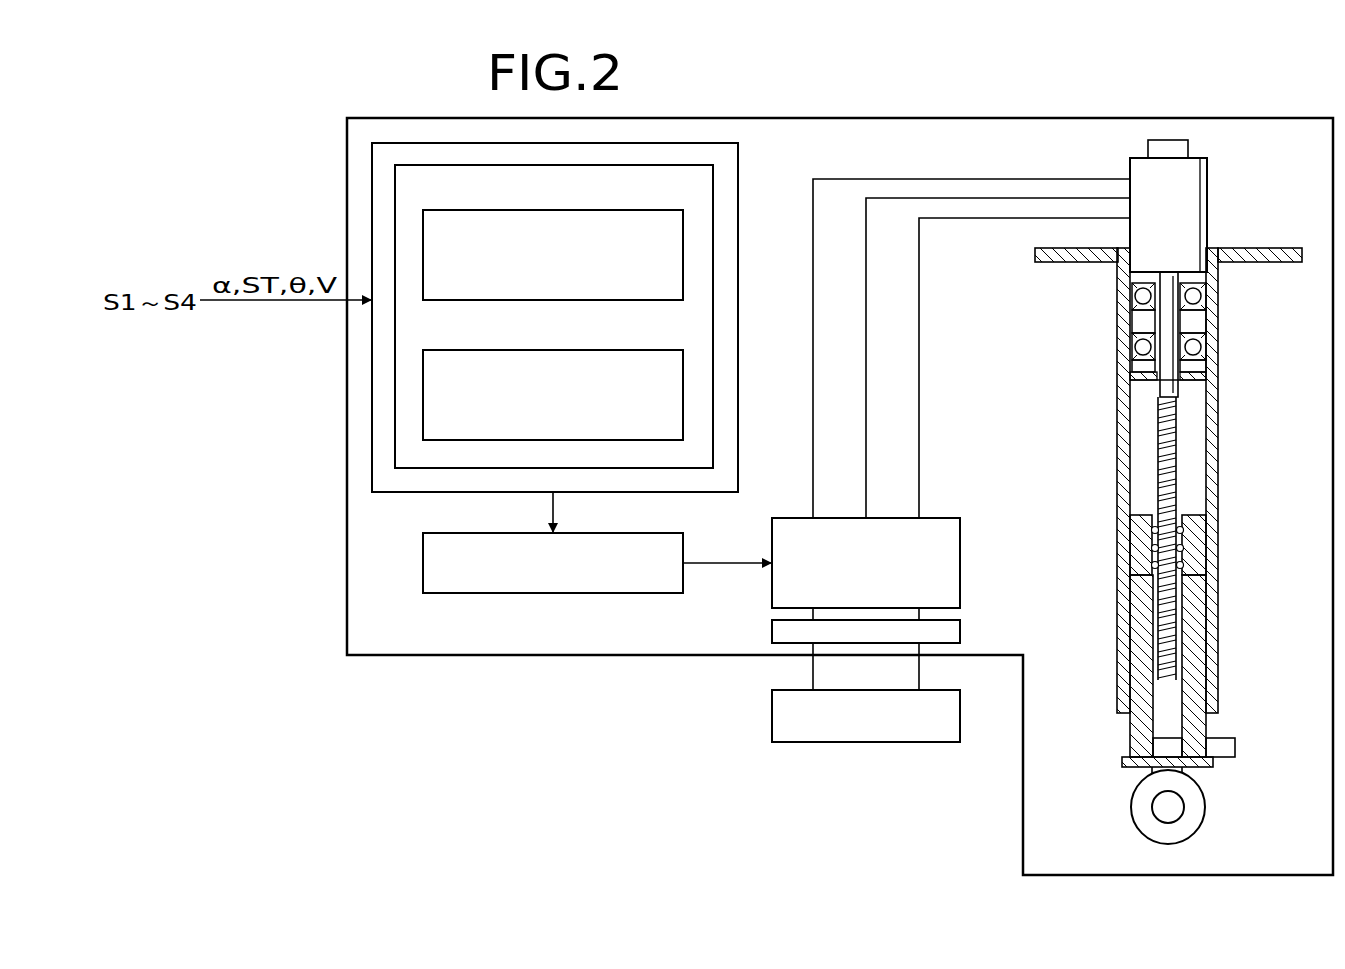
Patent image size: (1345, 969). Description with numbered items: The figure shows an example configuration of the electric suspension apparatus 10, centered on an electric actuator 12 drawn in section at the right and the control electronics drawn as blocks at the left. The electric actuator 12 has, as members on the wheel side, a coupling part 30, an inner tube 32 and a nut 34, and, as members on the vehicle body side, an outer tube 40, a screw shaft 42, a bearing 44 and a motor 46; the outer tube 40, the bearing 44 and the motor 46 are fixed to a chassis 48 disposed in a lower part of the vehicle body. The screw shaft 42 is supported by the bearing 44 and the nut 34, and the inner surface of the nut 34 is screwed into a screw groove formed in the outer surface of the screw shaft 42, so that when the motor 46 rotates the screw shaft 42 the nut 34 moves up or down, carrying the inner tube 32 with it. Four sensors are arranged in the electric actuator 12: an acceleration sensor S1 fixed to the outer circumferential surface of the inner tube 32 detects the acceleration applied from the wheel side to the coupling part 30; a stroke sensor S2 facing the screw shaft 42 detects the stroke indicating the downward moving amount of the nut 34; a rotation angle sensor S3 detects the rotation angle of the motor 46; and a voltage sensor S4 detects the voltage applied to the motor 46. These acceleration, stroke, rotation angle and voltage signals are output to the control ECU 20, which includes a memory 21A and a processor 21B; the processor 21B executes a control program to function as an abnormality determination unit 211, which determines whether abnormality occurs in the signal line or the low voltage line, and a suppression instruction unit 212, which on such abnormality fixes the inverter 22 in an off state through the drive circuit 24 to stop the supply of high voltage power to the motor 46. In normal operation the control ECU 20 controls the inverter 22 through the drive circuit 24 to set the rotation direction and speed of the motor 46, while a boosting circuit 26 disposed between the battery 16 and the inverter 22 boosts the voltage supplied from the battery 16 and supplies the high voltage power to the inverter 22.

The electric suspension apparatus 10 is at (843, 118).
The electric actuator 12 is at (1258, 529).
The battery 16 is at (772, 705).
The control ECU 20 is at (488, 315).
The memory 21A is at (368, 165).
The processor 21B is at (393, 240).
The abnormality determination unit 211 is at (535, 210).
The suppression instruction unit 212 is at (535, 350).
The inverter 22 is at (943, 518).
The drive circuit 24 is at (625, 533).
The boosting circuit 26 is at (960, 635).
The coupling part 30 is at (1195, 808).
The inner tube 32 is at (1135, 750).
The nut 34 is at (1135, 530).
The outer tube 40 is at (1218, 645).
The screw shaft 42 is at (1172, 625).
The bearing 44 is at (1193, 298).
The motor 46 is at (1207, 163).
The chassis 48 is at (1275, 248).
The acceleration sensor S1 is at (1222, 748).
The stroke sensor S2 is at (1168, 746).
The rotation angle sensor S3 is at (1175, 104).
The voltage sensor S4 is at (1163, 148).